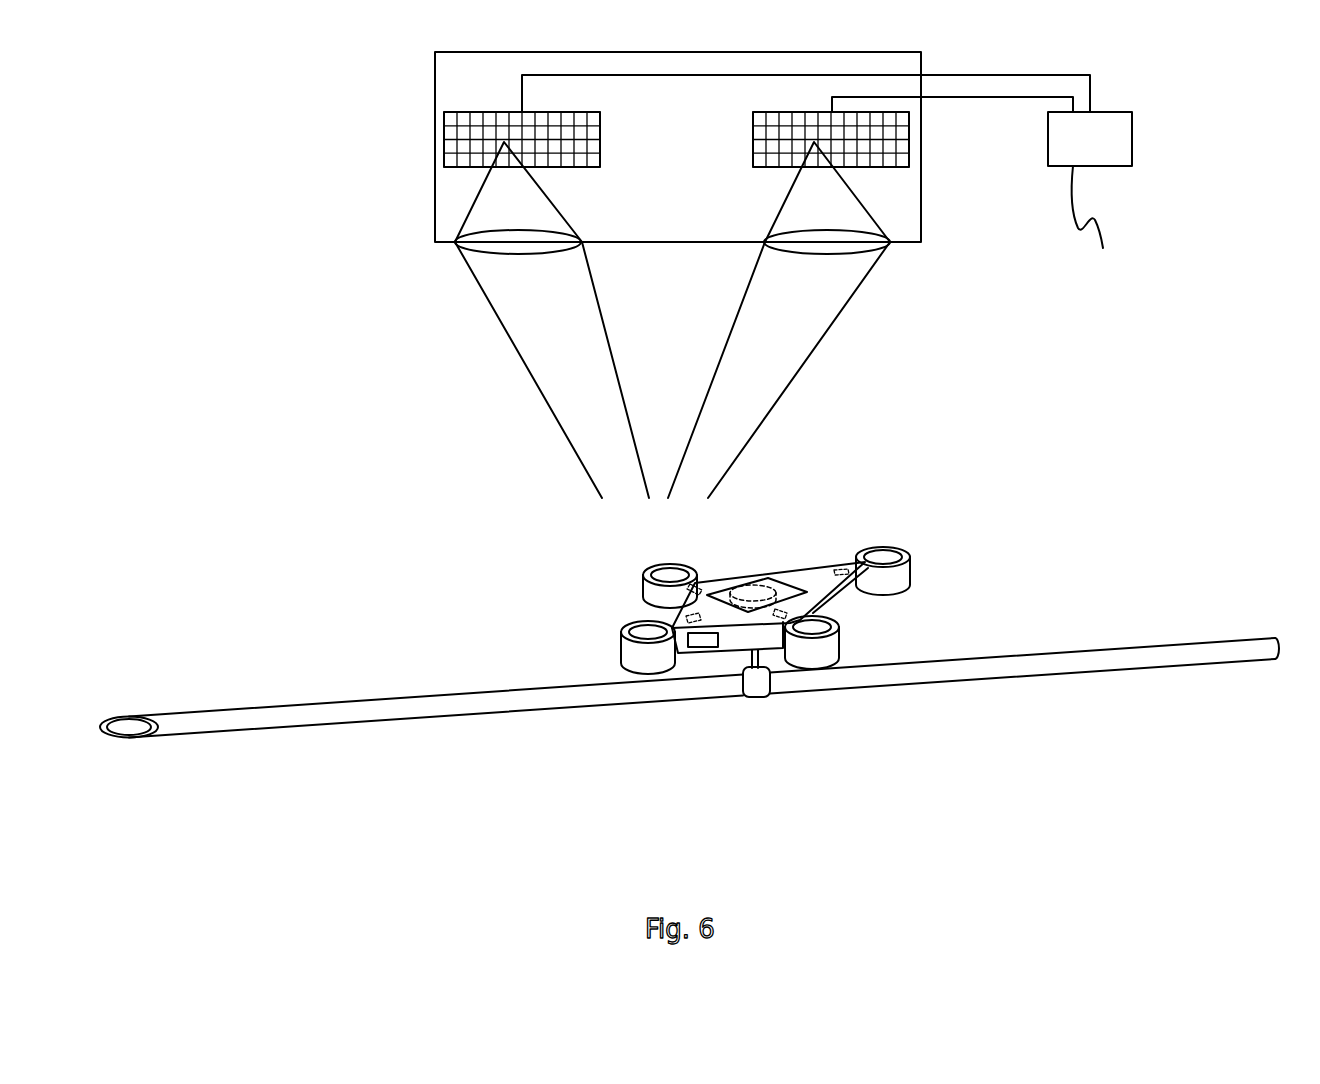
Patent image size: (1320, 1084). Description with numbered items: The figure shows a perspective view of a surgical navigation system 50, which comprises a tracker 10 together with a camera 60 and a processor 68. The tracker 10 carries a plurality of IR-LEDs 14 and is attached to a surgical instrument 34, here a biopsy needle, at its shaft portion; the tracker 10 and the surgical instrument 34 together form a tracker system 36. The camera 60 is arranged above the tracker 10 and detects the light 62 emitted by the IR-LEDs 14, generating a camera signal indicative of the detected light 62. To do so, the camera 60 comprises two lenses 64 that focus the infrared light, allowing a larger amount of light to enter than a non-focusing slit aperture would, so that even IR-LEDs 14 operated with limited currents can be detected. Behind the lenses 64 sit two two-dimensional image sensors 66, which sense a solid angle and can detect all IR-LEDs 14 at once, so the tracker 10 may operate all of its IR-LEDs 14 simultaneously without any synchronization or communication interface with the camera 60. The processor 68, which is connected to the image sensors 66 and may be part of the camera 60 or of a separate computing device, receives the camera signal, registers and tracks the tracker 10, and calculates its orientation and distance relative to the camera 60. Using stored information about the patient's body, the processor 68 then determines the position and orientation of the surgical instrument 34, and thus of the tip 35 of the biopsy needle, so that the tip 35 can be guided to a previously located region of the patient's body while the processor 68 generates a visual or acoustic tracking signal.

The tracker 10 is at (638, 548).
The IR-LEDs 14 is at (665, 575).
The surgical instrument 34 is at (689, 754).
The tip 35 is at (131, 737).
The tracker system 36 is at (914, 786).
The surgical navigation system 50 is at (725, 275).
The camera 60 is at (305, 247).
The light 62 is at (777, 403).
The lenses 64 is at (500, 255).
The two-dimensional image sensors 66 is at (442, 115).
The processor 68 is at (1090, 203).